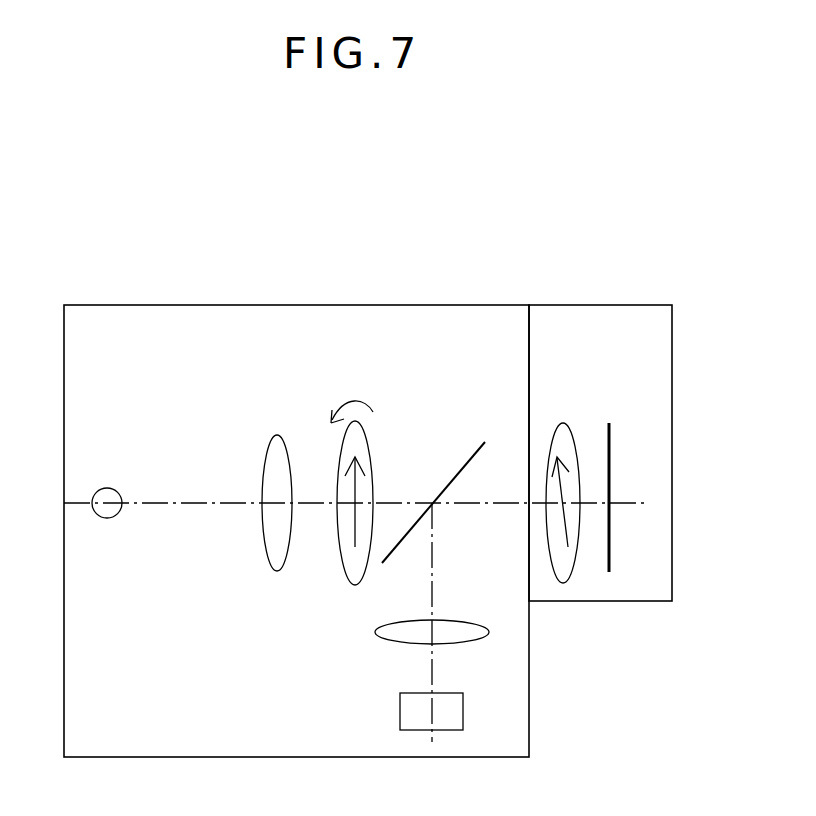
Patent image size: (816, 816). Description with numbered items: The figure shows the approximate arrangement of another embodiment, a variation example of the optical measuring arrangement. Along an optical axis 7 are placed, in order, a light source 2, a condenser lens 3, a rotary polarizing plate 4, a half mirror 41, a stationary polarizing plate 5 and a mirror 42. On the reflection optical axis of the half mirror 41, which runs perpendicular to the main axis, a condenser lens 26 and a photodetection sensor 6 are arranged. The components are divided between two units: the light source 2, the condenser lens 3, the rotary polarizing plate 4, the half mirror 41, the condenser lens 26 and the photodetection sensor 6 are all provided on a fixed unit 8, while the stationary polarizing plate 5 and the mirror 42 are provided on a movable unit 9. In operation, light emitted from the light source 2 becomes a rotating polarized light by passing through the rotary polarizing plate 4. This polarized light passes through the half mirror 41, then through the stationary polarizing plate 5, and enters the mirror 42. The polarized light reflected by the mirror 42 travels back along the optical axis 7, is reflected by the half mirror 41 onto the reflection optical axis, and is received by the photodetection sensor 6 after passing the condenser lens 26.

The light source 2 is at (107, 488).
The condenser lens 3 is at (276, 435).
The rotary polarizing plate 4 is at (370, 463).
The stationary polarizing plate 5 is at (565, 422).
The photodetection sensor 6 is at (400, 717).
The optical axis 7 is at (207, 505).
The fixed unit 8 is at (323, 305).
The movable unit 9 is at (600, 305).
The condenser lens 26 is at (473, 642).
The half mirror 41 is at (462, 463).
The mirror 42 is at (610, 450).